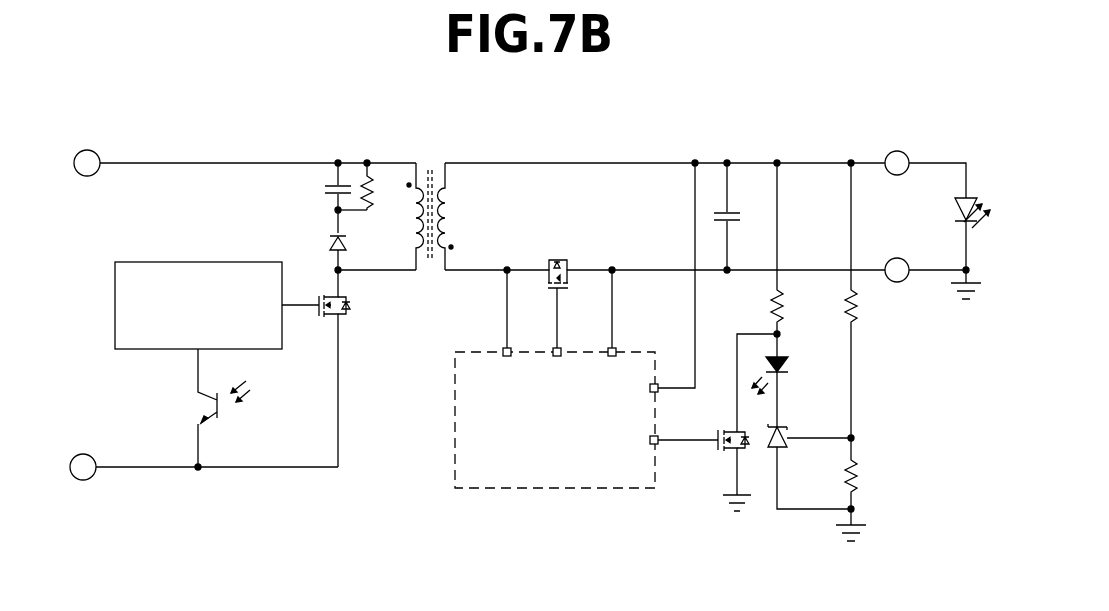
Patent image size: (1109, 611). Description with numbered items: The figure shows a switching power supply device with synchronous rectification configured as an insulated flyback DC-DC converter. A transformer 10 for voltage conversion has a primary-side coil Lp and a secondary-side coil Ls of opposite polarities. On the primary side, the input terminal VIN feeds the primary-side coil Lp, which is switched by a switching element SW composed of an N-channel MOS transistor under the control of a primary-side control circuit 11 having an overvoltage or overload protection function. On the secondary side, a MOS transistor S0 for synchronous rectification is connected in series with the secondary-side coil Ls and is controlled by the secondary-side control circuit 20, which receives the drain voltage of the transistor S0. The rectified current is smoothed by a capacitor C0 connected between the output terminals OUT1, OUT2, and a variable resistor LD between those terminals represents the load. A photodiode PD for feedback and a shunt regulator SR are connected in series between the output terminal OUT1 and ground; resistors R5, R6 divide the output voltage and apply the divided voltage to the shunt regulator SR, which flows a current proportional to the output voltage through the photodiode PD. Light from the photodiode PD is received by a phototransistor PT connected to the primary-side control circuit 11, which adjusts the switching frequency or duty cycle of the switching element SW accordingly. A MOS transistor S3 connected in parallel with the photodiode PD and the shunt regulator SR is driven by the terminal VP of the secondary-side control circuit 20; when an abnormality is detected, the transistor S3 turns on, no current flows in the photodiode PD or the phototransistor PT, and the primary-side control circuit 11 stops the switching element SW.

The transformer 10 is at (429, 183).
The primary-side control circuit 11 is at (210, 260).
The secondary-side control circuit 20 is at (522, 490).
The input terminal VIN is at (243, 150).
The switching element SW is at (329, 368).
The phototransistor PT is at (206, 408).
The primary-side coil Lp is at (403, 216).
The secondary-side coil Ls is at (440, 155).
The MOS transistor for synchronous rectification S0 is at (557, 290).
The capacitor C0 is at (736, 216).
The photodiode PD is at (787, 295).
The shunt regulator SR is at (809, 466).
The MOS transistor S3 is at (728, 470).
The resistor R5 is at (840, 300).
The resistor R6 is at (863, 489).
The output terminal OUT1 is at (897, 150).
The output terminal OUT2 is at (897, 285).
The variable resistor LD is at (949, 231).